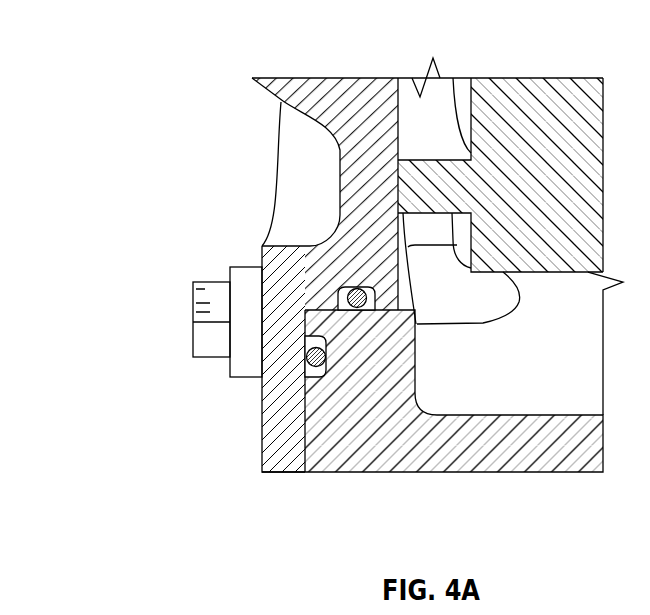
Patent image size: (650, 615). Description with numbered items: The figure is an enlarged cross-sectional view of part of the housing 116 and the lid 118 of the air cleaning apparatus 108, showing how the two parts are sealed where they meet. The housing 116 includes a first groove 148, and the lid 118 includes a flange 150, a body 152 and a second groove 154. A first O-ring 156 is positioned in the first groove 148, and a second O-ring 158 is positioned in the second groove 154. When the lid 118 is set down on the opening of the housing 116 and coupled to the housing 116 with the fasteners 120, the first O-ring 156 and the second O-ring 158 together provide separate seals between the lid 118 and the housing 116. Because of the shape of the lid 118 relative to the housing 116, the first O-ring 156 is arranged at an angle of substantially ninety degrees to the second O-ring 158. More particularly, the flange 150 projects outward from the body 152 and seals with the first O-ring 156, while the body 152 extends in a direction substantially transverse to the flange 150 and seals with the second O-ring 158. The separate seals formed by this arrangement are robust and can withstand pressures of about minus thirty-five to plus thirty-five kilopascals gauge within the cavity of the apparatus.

The air cleaning apparatus 108 is at (116, 37).
The housing 116 is at (428, 458).
The lid 118 is at (302, 87).
The fasteners 120 is at (193, 288).
The first groove 148 is at (315, 340).
The flange 150 is at (283, 438).
The body 152 is at (409, 79).
The second groove 154 is at (262, 245).
The first O-ring 156 is at (307, 367).
The second O-ring 158 is at (356, 288).